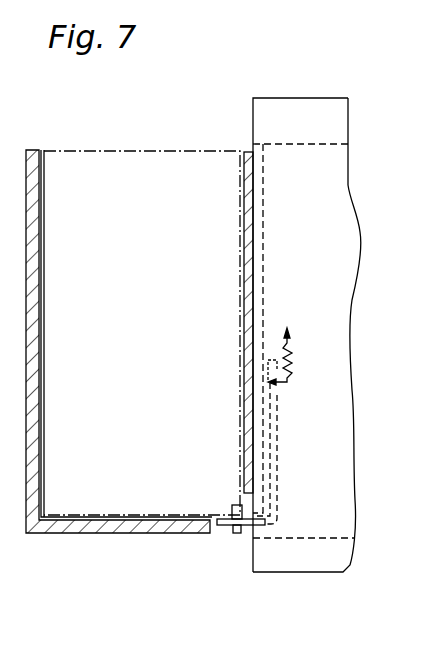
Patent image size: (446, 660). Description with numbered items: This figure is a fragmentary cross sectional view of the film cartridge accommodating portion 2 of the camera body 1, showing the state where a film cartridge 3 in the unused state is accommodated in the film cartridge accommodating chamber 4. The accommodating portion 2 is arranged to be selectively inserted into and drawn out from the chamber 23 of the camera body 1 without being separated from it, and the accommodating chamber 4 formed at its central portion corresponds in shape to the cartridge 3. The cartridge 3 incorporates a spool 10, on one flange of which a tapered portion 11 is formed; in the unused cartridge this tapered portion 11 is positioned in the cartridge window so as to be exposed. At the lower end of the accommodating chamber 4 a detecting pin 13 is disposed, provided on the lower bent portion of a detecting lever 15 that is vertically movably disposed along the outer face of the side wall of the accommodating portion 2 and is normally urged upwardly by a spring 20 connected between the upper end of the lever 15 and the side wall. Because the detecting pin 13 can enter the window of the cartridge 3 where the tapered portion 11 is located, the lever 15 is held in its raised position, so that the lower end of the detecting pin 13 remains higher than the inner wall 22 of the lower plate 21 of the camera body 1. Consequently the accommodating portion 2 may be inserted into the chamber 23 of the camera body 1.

The camera body 1 is at (296, 98).
The film cartridge accommodating portion 2 is at (27, 162).
The film cartridge 3 is at (119, 147).
The film cartridge accommodating chamber 4 is at (43, 150).
The spool 10 is at (216, 515).
The tapered portion 11 is at (238, 498).
The detecting pin 13 is at (238, 537).
The detecting lever 15 is at (282, 432).
The spring 20 is at (289, 364).
The lower plate 21 is at (318, 560).
The inner wall 22 is at (303, 537).
The chamber 23 is at (347, 237).